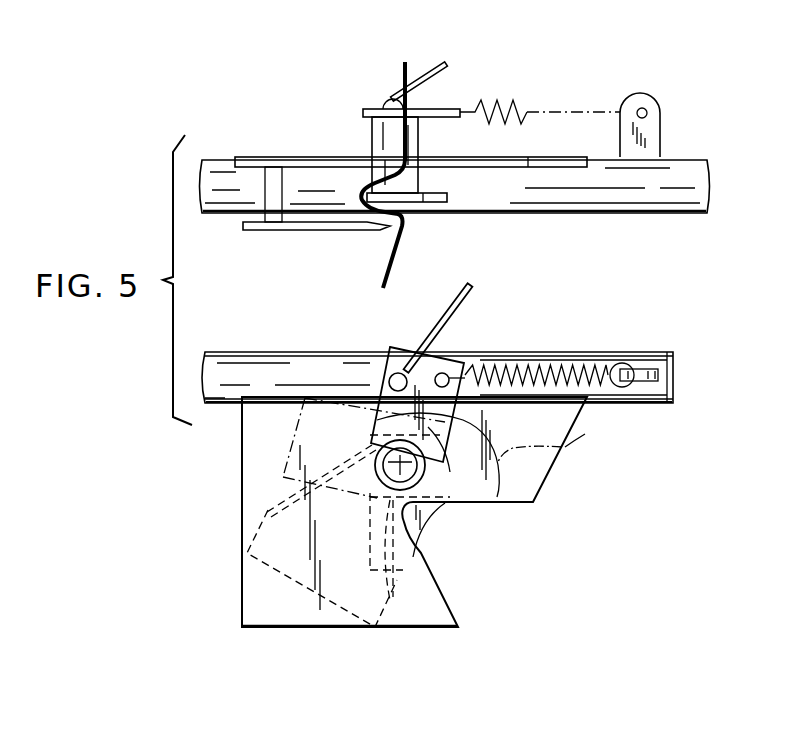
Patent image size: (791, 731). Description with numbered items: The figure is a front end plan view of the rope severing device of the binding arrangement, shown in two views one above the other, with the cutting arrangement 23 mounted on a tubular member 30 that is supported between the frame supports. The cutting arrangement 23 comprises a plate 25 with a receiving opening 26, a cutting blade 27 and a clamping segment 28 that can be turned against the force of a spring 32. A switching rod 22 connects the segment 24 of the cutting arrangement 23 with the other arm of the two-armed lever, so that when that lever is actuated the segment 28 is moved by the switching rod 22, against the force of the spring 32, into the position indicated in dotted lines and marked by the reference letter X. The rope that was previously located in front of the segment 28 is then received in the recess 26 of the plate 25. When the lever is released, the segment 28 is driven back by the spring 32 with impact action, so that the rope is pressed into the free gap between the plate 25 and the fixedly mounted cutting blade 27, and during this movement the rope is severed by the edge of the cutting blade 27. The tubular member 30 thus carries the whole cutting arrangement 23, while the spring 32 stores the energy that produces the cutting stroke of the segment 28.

The switching rod 22 is at (427, 74).
The cutting arrangement 23 is at (565, 462).
The segment 24 is at (450, 109).
The plate 25 is at (299, 160).
The receiving opening 26 is at (488, 576).
The cutting blade 27 is at (332, 224).
The clamping segment 28 is at (447, 194).
The tubular member 30 is at (683, 157).
The spring 32 is at (500, 104).